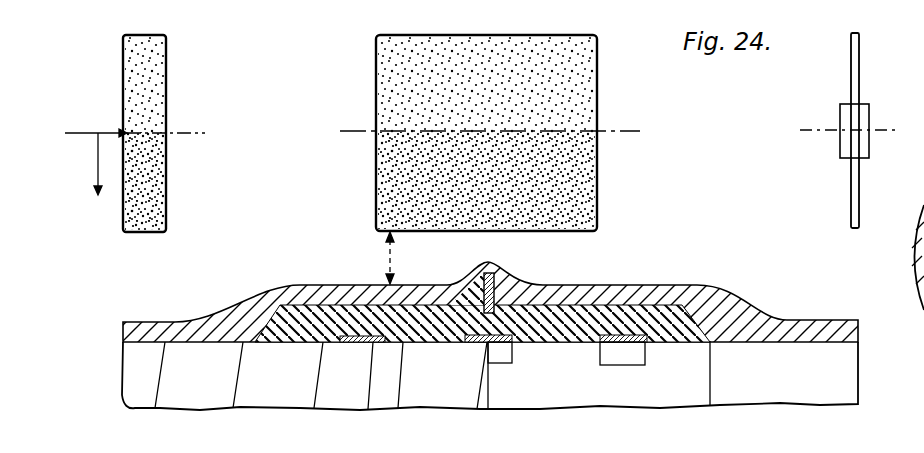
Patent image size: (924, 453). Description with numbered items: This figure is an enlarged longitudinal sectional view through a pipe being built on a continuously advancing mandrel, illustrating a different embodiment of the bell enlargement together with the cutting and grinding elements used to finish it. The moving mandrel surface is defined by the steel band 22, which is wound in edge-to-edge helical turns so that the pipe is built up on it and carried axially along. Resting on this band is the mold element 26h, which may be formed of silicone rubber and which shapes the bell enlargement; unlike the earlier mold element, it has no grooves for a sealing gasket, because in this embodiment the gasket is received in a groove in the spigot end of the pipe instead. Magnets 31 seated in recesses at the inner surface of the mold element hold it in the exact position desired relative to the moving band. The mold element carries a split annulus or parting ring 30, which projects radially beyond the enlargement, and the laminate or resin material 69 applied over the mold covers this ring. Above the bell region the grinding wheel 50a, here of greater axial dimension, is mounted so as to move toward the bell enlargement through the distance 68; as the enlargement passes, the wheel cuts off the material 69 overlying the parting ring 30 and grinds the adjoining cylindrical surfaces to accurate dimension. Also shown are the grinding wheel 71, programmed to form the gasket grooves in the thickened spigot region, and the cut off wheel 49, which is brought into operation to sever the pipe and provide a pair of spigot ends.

The grinding wheel 71 is at (166, 184).
The grinding wheel 50a is at (385, 178).
The cut off wheel 49 is at (858, 76).
The laminate or resin material 69 is at (470, 276).
The distance 68 is at (388, 254).
The split annulus or ring 30 is at (495, 279).
The magnets 31 is at (372, 412).
The steel band 22 is at (205, 392).
The mold element 26h is at (556, 350).